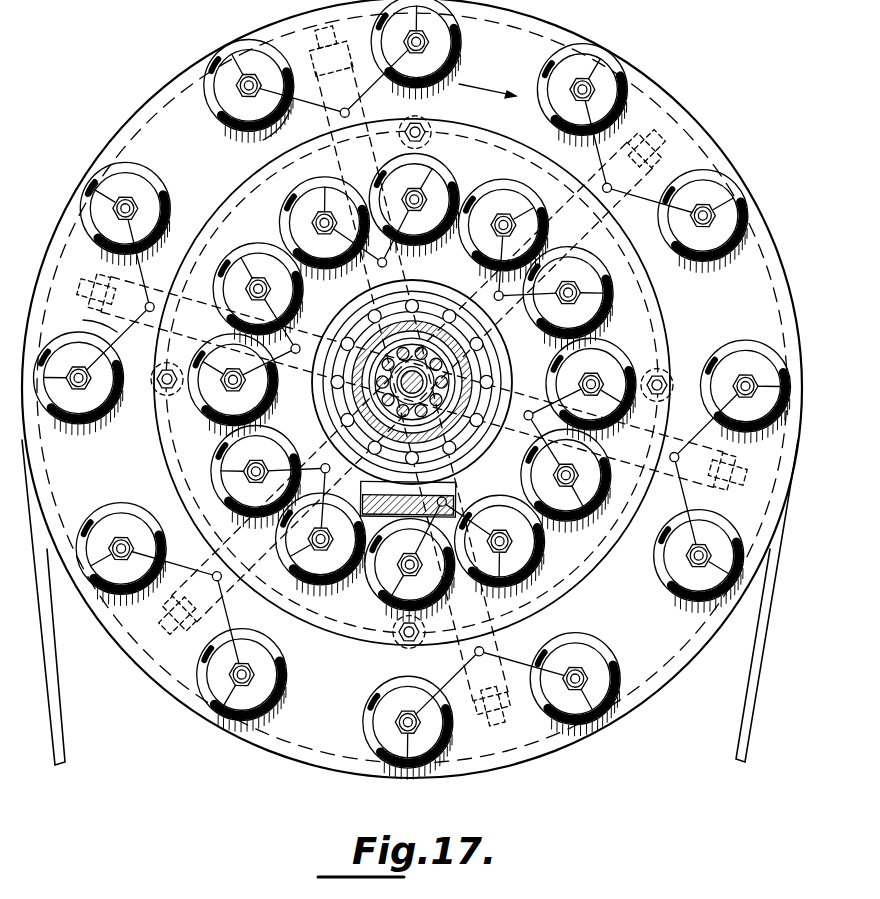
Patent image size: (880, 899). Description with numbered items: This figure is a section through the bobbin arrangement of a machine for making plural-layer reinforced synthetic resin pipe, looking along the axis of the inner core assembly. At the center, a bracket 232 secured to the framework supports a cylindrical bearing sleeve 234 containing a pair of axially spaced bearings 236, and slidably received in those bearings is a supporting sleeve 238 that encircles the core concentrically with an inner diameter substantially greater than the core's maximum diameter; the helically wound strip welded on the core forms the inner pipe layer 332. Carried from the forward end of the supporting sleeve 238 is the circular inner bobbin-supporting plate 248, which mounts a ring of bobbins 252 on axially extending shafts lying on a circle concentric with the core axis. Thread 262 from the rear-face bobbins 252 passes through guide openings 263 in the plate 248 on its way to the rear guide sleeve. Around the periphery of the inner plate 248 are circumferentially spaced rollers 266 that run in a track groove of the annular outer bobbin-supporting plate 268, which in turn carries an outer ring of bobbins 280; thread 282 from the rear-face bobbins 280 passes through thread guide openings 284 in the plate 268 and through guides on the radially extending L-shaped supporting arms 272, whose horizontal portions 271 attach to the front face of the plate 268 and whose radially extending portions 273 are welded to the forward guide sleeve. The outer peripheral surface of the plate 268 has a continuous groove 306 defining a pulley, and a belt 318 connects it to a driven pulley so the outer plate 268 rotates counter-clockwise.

The bracket 232 is at (409, 570).
The cylindrical bearing sleeve 234 is at (432, 300).
The bearings 236 is at (341, 305).
The supporting sleeve 238 is at (318, 393).
The inner bobbin-supporting plate 248 is at (568, 586).
The bobbins 252 is at (535, 528).
The thread 262 is at (470, 468).
The guide openings 263 is at (528, 408).
The rollers 266 is at (395, 640).
The outer bobbin-supporting plate 268 is at (756, 266).
The horizontal portions 271 is at (323, 40).
The L-shaped supporting arms 272 is at (368, 109).
The radially extending portions 273 is at (333, 158).
The bobbins 280 is at (740, 348).
The thread 282 is at (85, 322).
The thread guide openings 284 is at (217, 572).
The groove 306 is at (694, 124).
The belt 318 is at (752, 688).
The inner pipe layer 332 is at (490, 352).